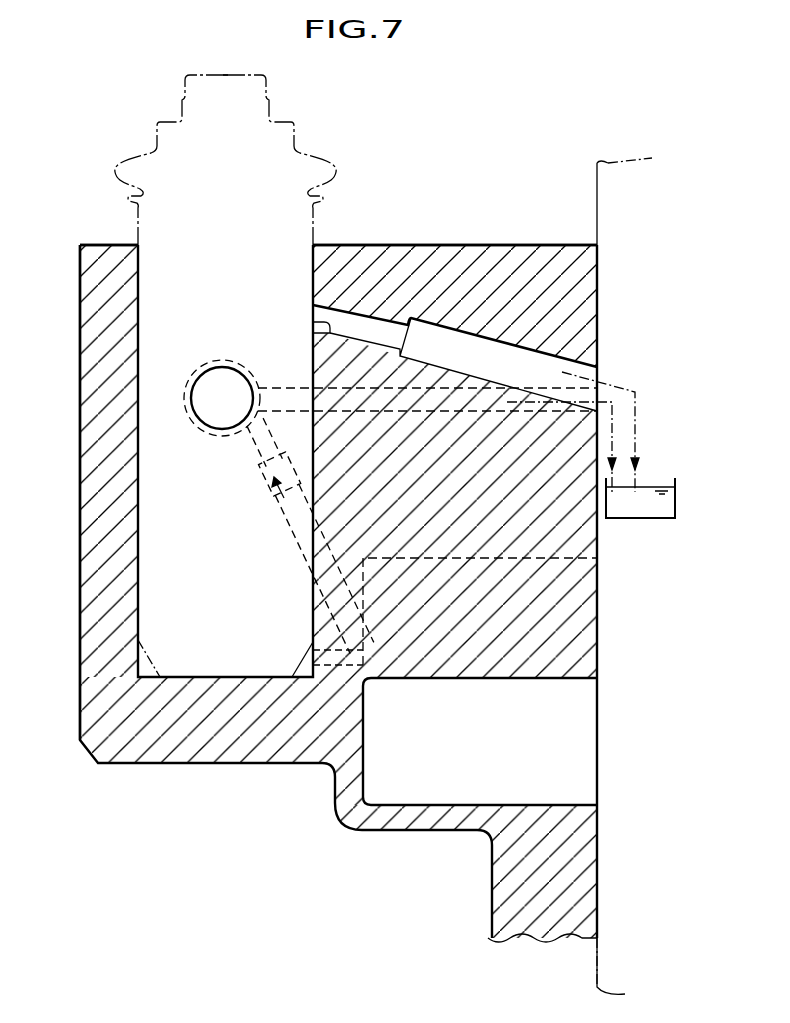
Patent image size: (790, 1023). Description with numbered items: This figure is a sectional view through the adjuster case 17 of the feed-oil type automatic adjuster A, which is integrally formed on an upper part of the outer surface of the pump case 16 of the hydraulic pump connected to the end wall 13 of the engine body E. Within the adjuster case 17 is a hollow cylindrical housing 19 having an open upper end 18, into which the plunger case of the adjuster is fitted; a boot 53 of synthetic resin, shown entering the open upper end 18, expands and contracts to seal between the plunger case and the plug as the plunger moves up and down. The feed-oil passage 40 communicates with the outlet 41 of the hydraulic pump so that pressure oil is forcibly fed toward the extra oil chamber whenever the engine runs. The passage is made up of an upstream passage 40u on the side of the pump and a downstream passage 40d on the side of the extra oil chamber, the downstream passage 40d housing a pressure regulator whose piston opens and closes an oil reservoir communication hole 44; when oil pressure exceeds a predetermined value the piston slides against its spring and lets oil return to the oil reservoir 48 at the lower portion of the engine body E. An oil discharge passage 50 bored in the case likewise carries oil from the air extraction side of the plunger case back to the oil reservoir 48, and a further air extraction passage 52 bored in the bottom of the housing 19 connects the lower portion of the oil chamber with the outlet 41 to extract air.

The end wall 13 is at (596, 222).
The pump case 16 is at (503, 890).
The adjuster case 17 is at (418, 254).
The open upper end 18 is at (144, 262).
The housing 19 is at (98, 500).
The feed-oil passage 40 is at (258, 507).
The downstream passage 40d is at (217, 432).
The upstream passage 40u is at (262, 502).
The outlet 41 is at (488, 745).
The oil reservoir communication hole 44 is at (440, 395).
The oil reservoir 48 is at (676, 507).
The oil discharge passage 50 is at (312, 321).
The air extraction passage 52 is at (350, 660).
The boot 53 is at (138, 152).
The feed-oil type automatic adjuster A is at (317, 146).
The engine body E is at (581, 181).